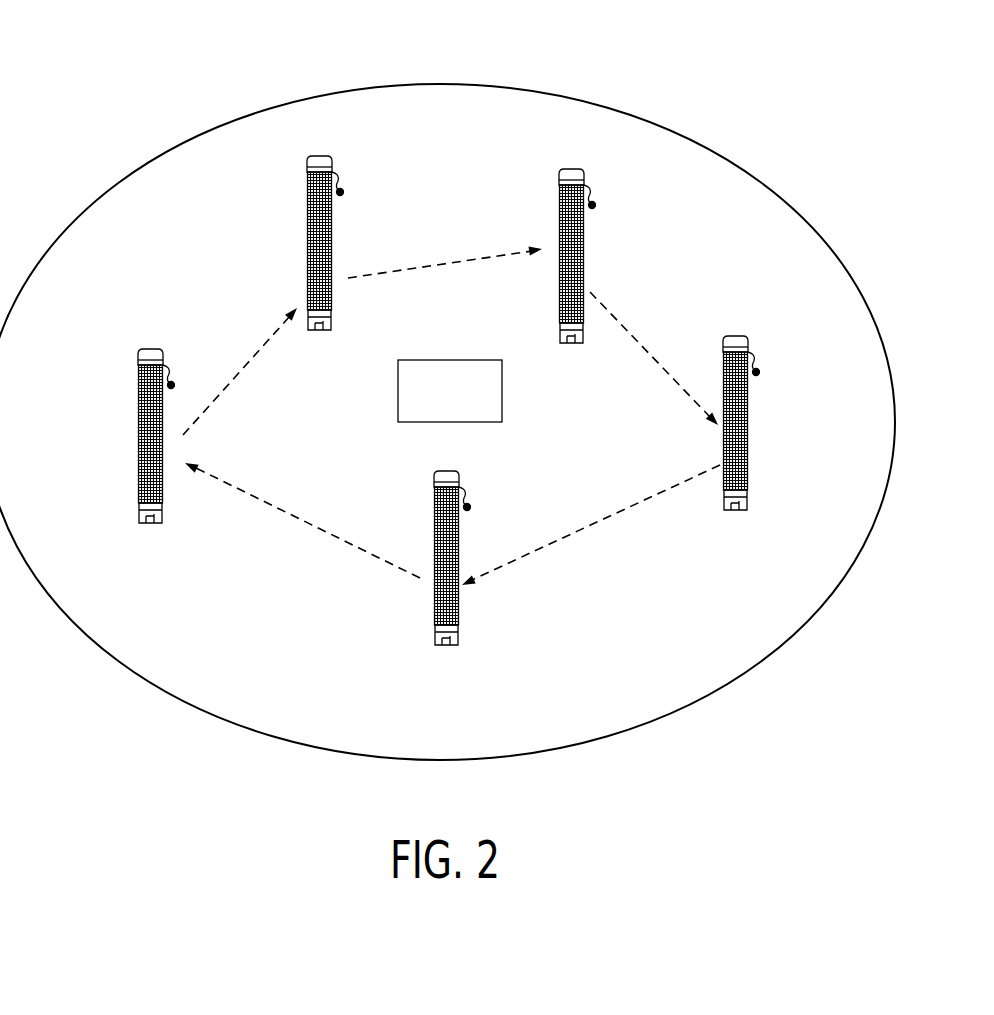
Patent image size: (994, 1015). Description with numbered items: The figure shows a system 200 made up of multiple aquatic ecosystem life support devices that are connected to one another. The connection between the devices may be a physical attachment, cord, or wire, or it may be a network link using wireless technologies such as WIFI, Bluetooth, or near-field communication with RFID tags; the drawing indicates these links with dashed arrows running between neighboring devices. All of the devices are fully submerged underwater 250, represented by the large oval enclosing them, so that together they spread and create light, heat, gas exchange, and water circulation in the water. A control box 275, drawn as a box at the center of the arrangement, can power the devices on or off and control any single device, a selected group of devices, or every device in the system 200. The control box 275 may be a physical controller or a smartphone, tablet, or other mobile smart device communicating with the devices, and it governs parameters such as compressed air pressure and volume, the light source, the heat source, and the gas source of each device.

The system 200 is at (84, 92).
The underwater 250 is at (712, 182).
The control box 275 is at (467, 406).